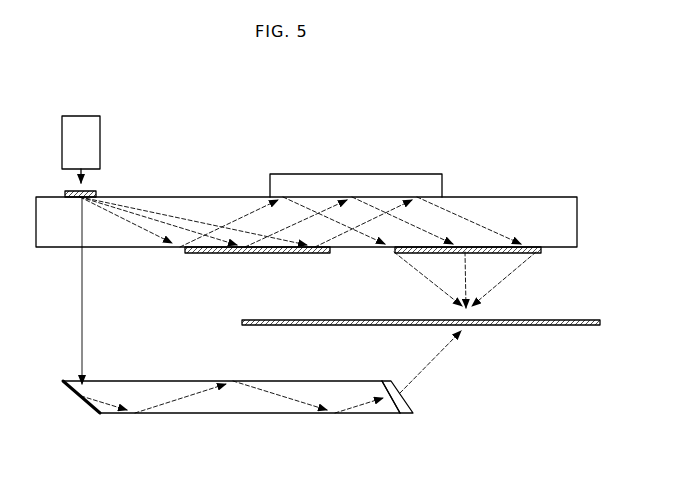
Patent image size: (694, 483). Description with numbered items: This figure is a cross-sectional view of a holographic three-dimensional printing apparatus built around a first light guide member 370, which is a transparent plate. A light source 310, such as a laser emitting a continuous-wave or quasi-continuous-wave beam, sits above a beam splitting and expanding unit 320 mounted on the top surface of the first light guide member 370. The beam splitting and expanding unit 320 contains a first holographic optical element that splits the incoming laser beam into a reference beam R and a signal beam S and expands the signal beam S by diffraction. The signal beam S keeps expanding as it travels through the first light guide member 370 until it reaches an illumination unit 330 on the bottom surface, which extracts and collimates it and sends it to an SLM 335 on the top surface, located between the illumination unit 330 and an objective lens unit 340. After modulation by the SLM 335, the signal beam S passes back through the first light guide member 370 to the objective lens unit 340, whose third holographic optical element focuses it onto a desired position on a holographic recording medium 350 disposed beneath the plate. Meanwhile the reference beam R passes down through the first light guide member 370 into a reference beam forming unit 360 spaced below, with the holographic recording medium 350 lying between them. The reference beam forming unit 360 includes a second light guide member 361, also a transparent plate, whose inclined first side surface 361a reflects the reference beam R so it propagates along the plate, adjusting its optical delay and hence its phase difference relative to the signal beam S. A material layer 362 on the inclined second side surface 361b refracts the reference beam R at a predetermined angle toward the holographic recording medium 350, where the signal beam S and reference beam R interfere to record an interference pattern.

The light source 310 is at (83, 116).
The beam splitting and expanding unit 320 is at (66, 192).
The illumination unit 330 is at (320, 253).
The SLM 335 is at (444, 178).
The objective lens unit 340 is at (541, 253).
The holographic recording medium 350 is at (575, 326).
The reference beam forming unit 360 is at (240, 408).
The second light guide member 361 is at (282, 388).
The first side surface 361a is at (73, 392).
The second side surface 361b is at (397, 410).
The material layer 362 is at (406, 403).
The first light guide member 370 is at (577, 224).
The signal beam S is at (173, 215).
The reference beam R is at (81, 313).